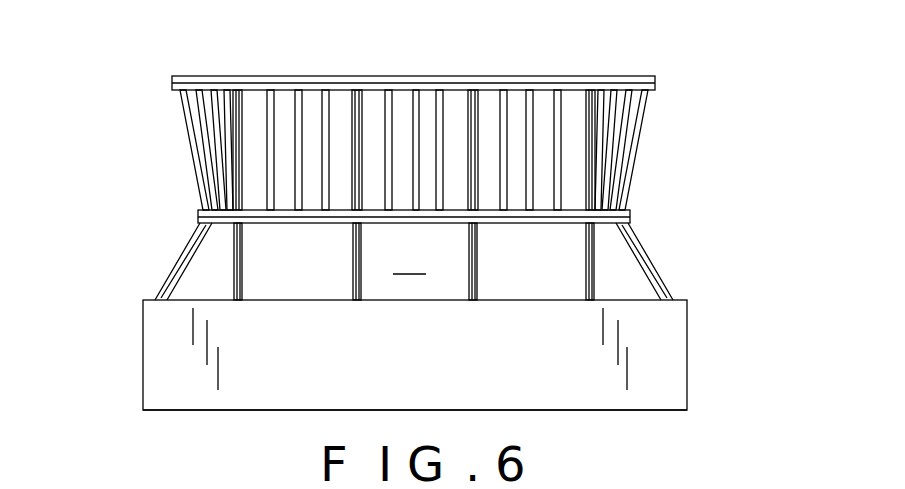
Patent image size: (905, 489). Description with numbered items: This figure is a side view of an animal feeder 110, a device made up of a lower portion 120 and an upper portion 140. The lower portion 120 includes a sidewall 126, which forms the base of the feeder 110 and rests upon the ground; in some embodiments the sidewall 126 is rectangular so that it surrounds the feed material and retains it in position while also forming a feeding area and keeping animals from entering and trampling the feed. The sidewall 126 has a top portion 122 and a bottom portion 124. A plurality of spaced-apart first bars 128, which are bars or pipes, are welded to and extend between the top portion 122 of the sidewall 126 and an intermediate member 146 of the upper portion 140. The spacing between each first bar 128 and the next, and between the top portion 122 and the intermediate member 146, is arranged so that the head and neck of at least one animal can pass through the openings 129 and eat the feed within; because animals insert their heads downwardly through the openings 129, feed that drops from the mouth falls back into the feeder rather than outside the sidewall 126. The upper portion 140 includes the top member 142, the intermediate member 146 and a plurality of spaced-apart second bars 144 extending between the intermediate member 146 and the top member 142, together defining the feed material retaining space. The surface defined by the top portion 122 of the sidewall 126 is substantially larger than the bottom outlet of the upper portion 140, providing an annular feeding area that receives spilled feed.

The feeder 110 is at (128, 90).
The lower portion 120 is at (665, 261).
The top portion 122 is at (255, 298).
The bottom portion 124 is at (284, 412).
The sidewall 126 is at (670, 343).
The first bars 128 is at (478, 250).
The openings 129 is at (409, 258).
The upper portion 140 is at (668, 167).
The top member 142 is at (234, 85).
The second bars 144 is at (192, 142).
The intermediate member 146 is at (198, 222).